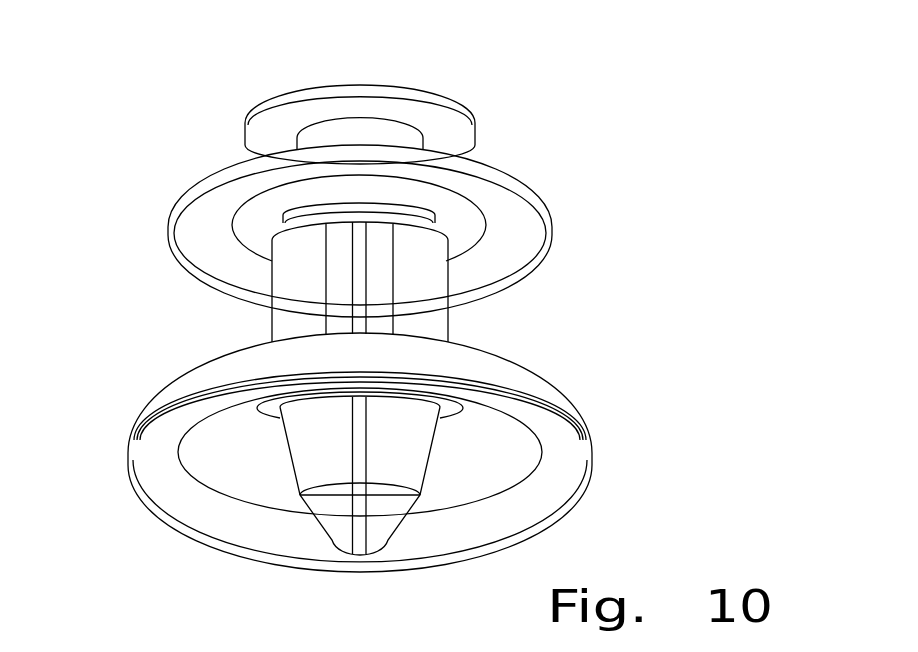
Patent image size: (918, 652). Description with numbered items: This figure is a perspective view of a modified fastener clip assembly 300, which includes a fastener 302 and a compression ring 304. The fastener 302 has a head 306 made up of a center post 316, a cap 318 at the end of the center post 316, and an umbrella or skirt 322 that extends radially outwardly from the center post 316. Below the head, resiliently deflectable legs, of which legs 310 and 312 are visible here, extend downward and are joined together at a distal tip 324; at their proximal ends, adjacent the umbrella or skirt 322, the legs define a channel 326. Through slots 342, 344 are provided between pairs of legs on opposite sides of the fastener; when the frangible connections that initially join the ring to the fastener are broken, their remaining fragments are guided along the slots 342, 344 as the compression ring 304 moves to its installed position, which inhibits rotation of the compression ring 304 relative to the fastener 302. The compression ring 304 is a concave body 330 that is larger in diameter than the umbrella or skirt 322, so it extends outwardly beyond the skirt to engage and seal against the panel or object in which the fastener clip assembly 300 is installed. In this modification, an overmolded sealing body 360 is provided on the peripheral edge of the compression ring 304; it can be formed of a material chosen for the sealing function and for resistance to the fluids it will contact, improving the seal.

The fastener clip assembly 300 is at (166, 142).
The fastener 302 is at (367, 70).
The compression ring 304 is at (594, 374).
The head 306 is at (556, 174).
The resiliently deflectable leg 310 is at (282, 322).
The resiliently deflectable leg 312 is at (437, 323).
The center post 316 is at (326, 130).
The cap 318 is at (425, 98).
The umbrella or skirt 322 is at (168, 232).
The distal tip 324 is at (345, 552).
The channel 326 is at (417, 212).
The concave body 330 is at (217, 470).
The through slot 342 is at (338, 293).
The through slot 344 is at (380, 298).
The overmolded sealing body 360 is at (565, 420).